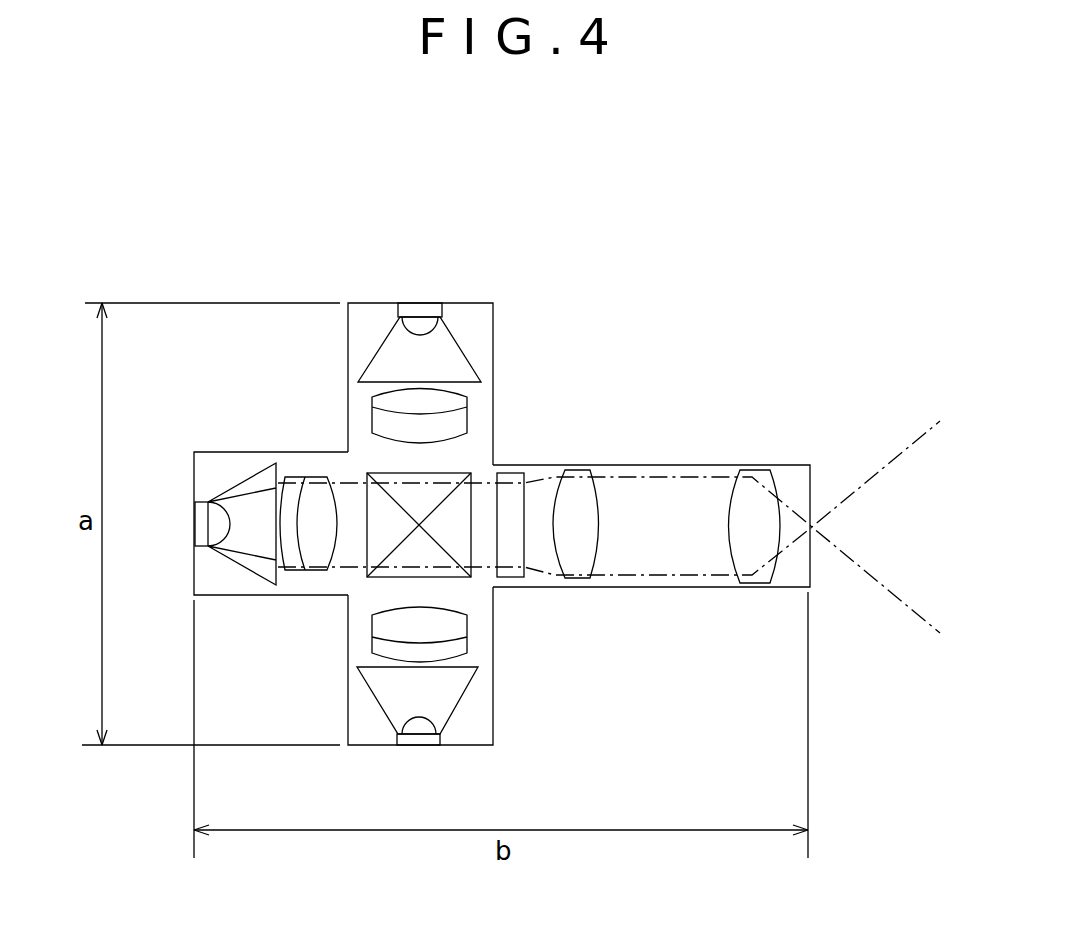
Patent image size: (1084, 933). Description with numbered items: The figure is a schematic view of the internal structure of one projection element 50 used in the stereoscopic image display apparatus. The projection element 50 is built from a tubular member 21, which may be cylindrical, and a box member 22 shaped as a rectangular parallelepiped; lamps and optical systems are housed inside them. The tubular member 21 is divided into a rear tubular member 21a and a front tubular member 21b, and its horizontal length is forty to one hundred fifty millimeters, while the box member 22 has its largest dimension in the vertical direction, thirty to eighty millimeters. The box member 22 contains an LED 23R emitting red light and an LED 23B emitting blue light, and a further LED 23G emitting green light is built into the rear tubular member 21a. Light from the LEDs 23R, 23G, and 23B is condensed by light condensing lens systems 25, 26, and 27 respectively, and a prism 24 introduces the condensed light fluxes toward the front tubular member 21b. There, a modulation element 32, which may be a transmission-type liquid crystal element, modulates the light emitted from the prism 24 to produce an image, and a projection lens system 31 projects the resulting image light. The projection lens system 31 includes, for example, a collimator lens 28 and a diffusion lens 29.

The projection element 50 is at (437, 199).
The tubular member 21 is at (716, 596).
The rear tubular member 21a is at (271, 598).
The front tubular member 21b is at (637, 588).
The box member 22 is at (503, 356).
The LED 23R is at (420, 322).
The LED 23G is at (212, 524).
The LED 23B is at (421, 748).
The prism 24 is at (398, 488).
The light condensing lens system 25 is at (457, 425).
The light condensing lens system 26 is at (315, 488).
The light condensing lens system 27 is at (458, 630).
The collimator lens 28 is at (577, 470).
The diffusion lens 29 is at (755, 470).
The projection lens system 31 is at (783, 415).
The modulation element 32 is at (515, 580).